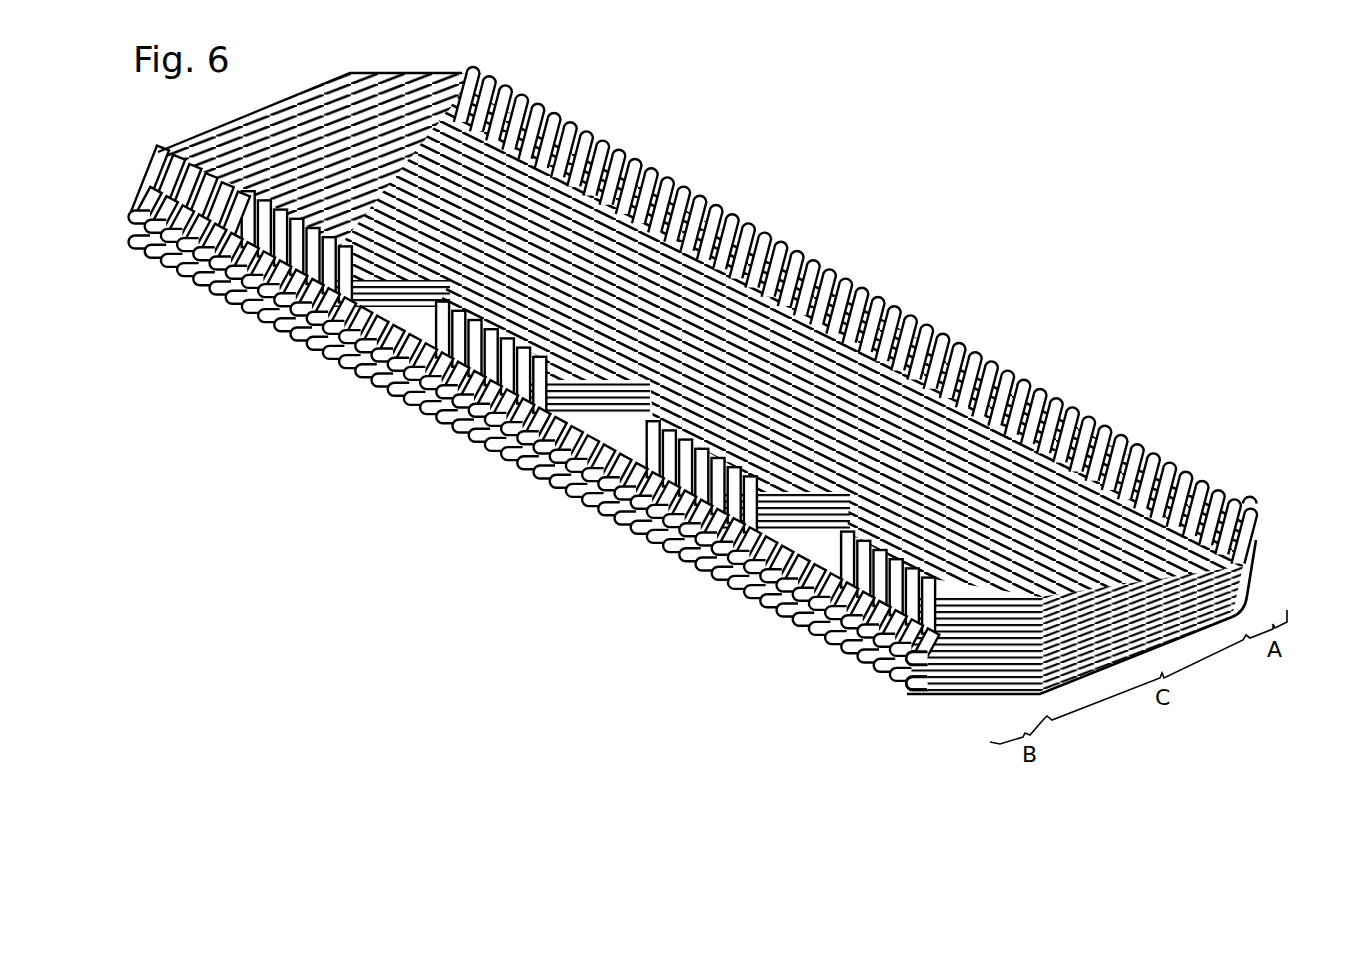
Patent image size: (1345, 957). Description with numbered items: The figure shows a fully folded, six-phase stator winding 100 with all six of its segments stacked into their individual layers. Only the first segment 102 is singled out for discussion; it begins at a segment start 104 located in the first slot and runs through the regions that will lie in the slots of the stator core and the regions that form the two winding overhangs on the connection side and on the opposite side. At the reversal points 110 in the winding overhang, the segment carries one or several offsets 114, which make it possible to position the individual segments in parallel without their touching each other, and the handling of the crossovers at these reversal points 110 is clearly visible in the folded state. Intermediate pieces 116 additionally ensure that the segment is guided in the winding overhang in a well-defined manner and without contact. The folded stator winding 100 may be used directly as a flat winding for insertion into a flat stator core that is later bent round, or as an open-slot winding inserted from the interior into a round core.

The stator winding 100 is at (866, 232).
The first segment 102 is at (970, 690).
The segment start 104 is at (1254, 598).
The reversal points 110 is at (883, 676).
The offset 114 is at (845, 700).
The intermediate pieces 116 is at (1252, 505).